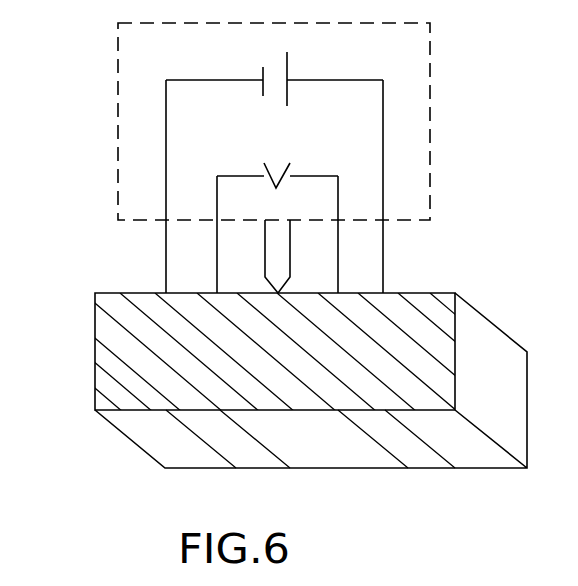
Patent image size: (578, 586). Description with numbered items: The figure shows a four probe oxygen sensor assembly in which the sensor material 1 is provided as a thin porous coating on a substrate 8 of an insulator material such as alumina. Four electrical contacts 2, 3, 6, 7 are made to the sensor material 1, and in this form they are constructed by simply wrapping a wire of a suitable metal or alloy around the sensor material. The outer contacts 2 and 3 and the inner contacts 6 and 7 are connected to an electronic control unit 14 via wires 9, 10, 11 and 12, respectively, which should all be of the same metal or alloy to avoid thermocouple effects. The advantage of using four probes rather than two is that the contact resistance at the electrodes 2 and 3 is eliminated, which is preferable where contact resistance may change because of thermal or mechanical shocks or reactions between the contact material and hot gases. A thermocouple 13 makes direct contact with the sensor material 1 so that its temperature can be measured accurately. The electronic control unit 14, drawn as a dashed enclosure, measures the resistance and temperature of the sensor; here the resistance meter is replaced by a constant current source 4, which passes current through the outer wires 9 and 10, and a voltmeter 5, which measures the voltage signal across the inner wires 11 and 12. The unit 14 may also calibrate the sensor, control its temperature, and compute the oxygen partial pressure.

The sensor material 1 is at (125, 303).
The electrical contact 2 is at (166, 343).
The electrical contact 3 is at (375, 383).
The constant current source 4 is at (290, 62).
The voltmeter 5 is at (292, 168).
The electrical contact 6 is at (217, 388).
The electrical contact 7 is at (340, 313).
The substrate 8 is at (473, 348).
The wire 9 is at (166, 257).
The wire 10 is at (383, 257).
The wire 11 is at (217, 257).
The wire 12 is at (338, 257).
The thermocouple 13 is at (290, 254).
The electronic control unit 14 is at (398, 38).